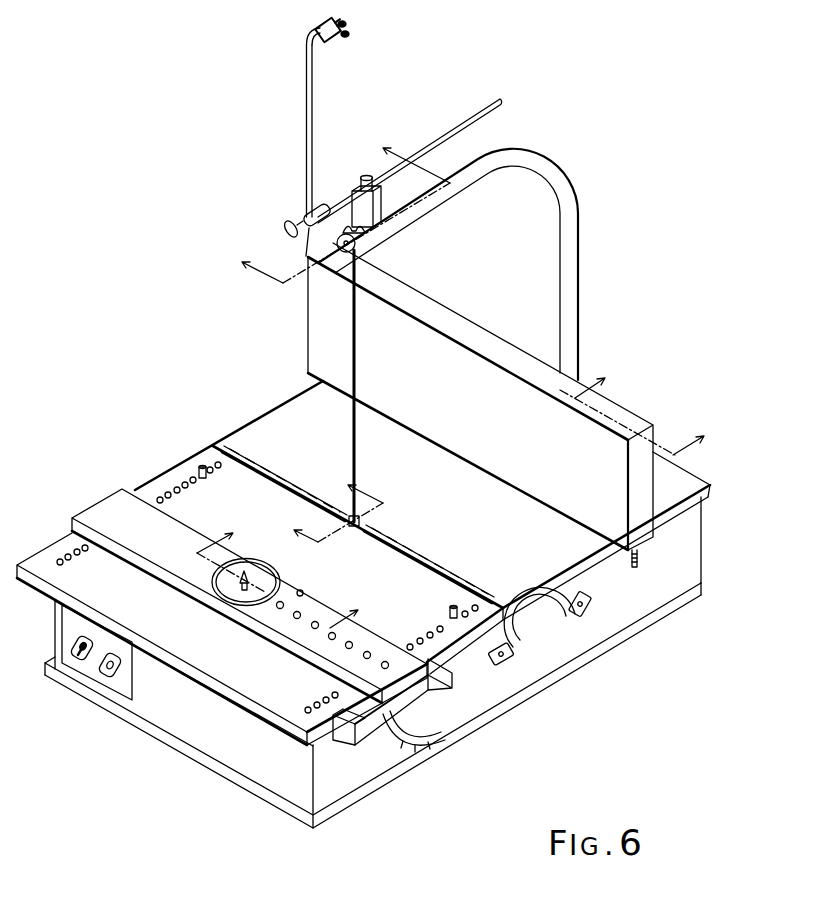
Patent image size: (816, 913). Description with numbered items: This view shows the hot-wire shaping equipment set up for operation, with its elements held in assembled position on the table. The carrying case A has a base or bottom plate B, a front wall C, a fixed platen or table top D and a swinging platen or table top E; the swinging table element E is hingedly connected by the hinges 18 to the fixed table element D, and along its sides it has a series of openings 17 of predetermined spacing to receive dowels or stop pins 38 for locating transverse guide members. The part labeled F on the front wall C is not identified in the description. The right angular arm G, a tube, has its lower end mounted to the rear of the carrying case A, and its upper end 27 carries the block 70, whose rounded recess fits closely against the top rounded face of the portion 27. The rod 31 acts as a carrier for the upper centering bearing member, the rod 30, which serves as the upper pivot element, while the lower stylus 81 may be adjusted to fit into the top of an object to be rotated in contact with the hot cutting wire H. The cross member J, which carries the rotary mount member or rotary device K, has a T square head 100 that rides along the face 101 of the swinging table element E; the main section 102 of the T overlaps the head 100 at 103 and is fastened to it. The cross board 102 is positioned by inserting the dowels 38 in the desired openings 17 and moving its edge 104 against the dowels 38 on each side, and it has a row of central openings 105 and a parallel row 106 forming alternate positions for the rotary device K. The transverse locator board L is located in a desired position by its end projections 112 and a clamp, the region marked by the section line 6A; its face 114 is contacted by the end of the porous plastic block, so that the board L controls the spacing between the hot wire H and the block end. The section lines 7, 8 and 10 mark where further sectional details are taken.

The carrying case A is at (700, 532).
The base or bottom plate B is at (607, 637).
The front wall C is at (240, 753).
The fixed platen or table top D is at (302, 410).
The swinging platen or table top E is at (230, 663).
The carrying handle F is at (627, 600).
The right angular arm G is at (567, 185).
The cutting wire H is at (357, 362).
The cross board J is at (370, 637).
The rotary mount member K is at (236, 596).
The transverse locator board L is at (403, 297).
The section line 6A- 6A is at (644, 405).
The section line 7- 7 is at (335, 213).
The section line 8- 8 is at (330, 504).
The section line 10- 10 is at (286, 576).
The openings 17 is at (167, 493).
The hinges 18 is at (267, 473).
The upper end of arm 27 is at (410, 213).
The rod 30 is at (312, 125).
The rod 31 is at (433, 146).
The dowels or locator plugs 38 is at (202, 466).
The block 70 is at (382, 200).
The lower stylus 81 is at (305, 248).
The T square head 100 is at (363, 733).
The face of swinging table element 101 is at (295, 753).
The main section of the T 102 is at (155, 560).
The overlap 103 is at (425, 690).
The edge 104 is at (177, 517).
The row of central openings 105 is at (330, 637).
The parallel row 106 is at (303, 590).
The end projections 112 is at (640, 560).
The face of cross member 114 is at (430, 368).